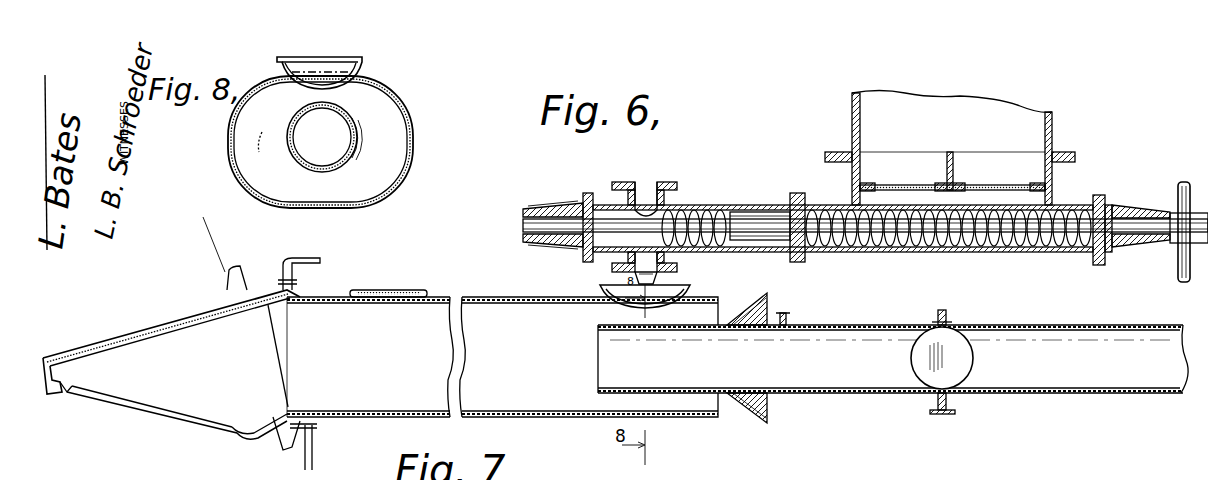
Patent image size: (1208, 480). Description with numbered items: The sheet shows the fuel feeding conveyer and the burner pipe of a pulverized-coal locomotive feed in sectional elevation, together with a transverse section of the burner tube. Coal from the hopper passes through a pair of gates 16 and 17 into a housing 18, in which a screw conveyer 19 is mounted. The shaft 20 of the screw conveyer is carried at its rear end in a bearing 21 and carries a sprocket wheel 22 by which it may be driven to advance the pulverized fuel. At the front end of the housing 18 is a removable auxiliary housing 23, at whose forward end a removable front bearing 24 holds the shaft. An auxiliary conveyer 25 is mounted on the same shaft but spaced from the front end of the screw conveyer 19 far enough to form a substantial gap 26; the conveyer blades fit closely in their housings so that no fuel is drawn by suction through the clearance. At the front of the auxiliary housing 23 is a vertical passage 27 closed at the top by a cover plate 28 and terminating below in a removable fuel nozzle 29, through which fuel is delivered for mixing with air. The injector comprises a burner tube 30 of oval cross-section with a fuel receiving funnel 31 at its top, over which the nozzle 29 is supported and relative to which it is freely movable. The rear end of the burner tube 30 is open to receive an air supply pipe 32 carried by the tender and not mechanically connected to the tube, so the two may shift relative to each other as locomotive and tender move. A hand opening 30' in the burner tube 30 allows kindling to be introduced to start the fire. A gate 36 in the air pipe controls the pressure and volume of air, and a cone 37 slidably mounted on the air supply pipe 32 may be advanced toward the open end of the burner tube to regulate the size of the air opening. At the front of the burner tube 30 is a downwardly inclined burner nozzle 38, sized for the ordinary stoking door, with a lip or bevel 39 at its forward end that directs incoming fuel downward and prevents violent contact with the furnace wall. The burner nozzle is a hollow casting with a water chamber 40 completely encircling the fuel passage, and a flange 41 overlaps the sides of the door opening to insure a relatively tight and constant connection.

In FIG. 6, the gate 16 is at (900, 190).
In FIG. 6, the gate 17 is at (975, 190).
In FIG. 6, the housing 18 is at (1060, 200).
In FIG. 6, the screw conveyer 19 is at (915, 245).
In FIG. 6, the shaft 20 is at (1090, 250).
In FIG. 6, the bearing 21 is at (1125, 212).
In FIG. 6, the sprocket wheel 22 is at (1180, 180).
In FIG. 6, the auxiliary housing 23 is at (740, 205).
In FIG. 6, the removable front bearing 24 is at (560, 205).
In FIG. 6, the auxiliary conveyer 25 is at (700, 205).
In FIG. 6, the gap 26 is at (785, 215).
In FIG. 6, the vertical passage 27 is at (650, 200).
In FIG. 6, the cover plate 28 is at (628, 182).
In FIG. 6, the removable fuel nozzle 29 is at (615, 269).
In FIG. 8, the burner tube 30 is at (345, 142).
In FIG. 7, the burner tube 30 is at (502, 342).
In FIG. 7, the hand opening 30' is at (388, 266).
In FIG. 8, the fuel receiving funnel 31 is at (365, 60).
In FIG. 7, the fuel receiving funnel 31 is at (690, 291).
In FIG. 8, the air supply pipe 32 is at (350, 143).
In FIG. 7, the air supply pipe 32 is at (815, 400).
In FIG. 7, the gate 36 is at (955, 345).
In FIG. 8, the cone 37 is at (252, 150).
In FIG. 7, the cone 37 is at (740, 412).
In FIG. 7, the burner nozzle 38 is at (163, 392).
In FIG. 7, the lip or bevel 39 is at (73, 395).
In FIG. 7, the water chamber 40 is at (120, 340).
In FIG. 7, the flange 41 is at (225, 282).